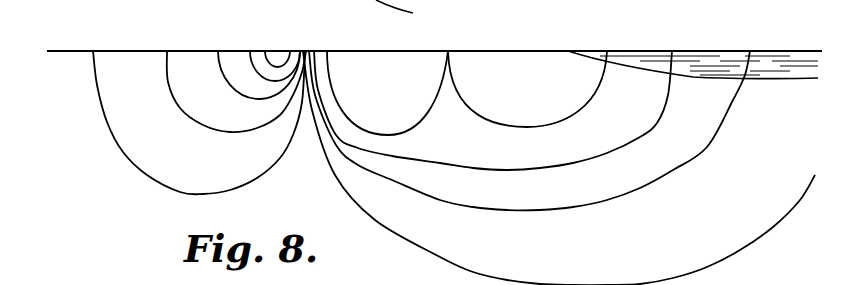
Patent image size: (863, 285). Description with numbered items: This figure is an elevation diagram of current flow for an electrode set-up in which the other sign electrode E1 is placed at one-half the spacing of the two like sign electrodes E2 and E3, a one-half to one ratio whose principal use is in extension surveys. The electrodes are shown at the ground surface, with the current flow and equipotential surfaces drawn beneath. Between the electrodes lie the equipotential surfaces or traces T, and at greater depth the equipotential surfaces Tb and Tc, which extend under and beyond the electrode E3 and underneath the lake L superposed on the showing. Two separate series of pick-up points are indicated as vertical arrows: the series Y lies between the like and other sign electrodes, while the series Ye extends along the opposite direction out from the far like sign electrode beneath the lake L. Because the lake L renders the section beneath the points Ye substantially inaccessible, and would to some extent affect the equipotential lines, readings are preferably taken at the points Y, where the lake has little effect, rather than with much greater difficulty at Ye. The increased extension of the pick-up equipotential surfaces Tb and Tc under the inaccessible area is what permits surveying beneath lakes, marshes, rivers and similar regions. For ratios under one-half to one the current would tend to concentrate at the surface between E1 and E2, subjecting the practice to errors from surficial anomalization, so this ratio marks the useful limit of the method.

The electrode E1 is at (277, 22).
The electrode E2 is at (363, 45).
The electrode E3 is at (528, 45).
The pick-up points Y is at (323, 45).
The pick-up points Ye is at (808, 46).
The equipotential surface T is at (328, 70).
The equipotential surface Tb is at (444, 164).
The equipotential surface Tc is at (459, 267).
The lake L is at (720, 63).